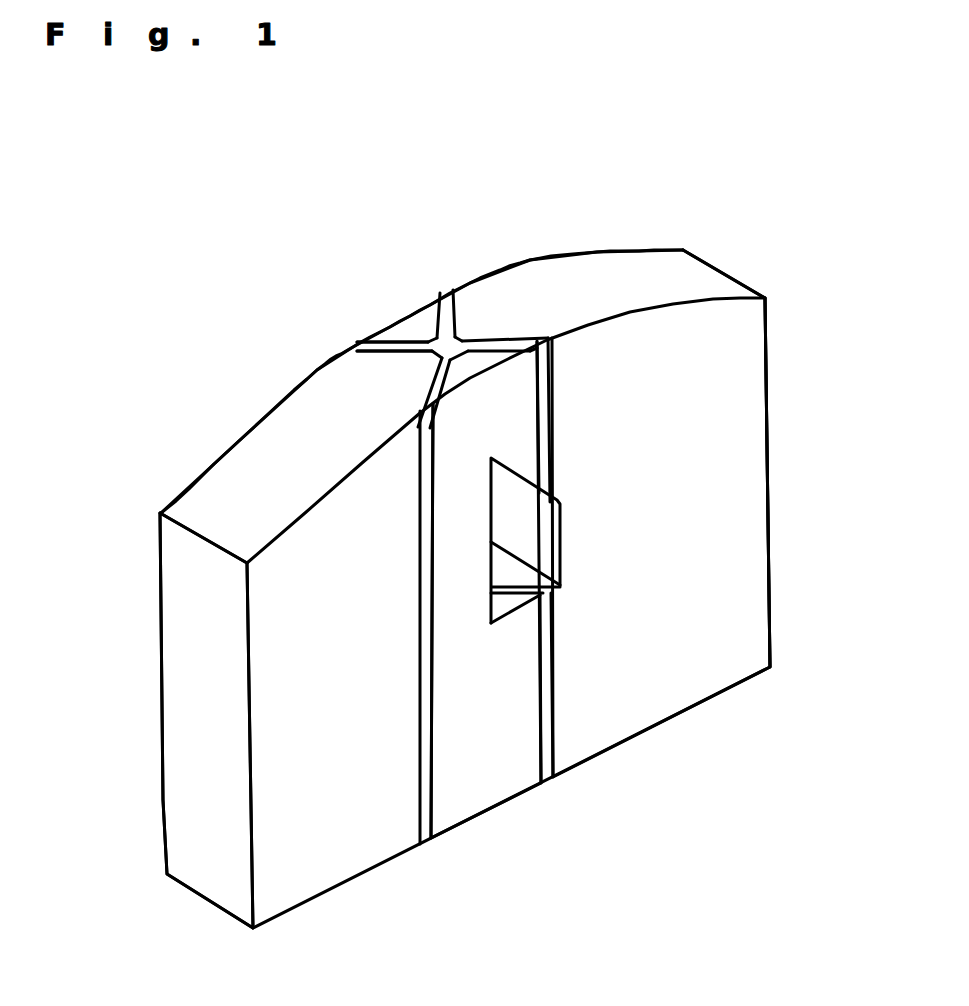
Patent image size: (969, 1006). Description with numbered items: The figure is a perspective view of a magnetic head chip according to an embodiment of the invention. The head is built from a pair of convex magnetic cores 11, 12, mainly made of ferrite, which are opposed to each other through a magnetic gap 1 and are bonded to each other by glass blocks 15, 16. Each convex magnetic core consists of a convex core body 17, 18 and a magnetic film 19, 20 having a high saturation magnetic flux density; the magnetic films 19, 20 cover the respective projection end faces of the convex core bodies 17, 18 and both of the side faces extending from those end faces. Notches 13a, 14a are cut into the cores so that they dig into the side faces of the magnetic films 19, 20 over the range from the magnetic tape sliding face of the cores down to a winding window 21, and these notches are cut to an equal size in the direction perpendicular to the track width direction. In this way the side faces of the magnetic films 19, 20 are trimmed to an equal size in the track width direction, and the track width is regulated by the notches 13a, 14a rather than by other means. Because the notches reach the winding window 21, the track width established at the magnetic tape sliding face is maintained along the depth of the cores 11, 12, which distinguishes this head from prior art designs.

The magnetic gap 1 is at (457, 340).
The convex magnetic core 11 is at (161, 818).
The convex magnetic core 12 is at (767, 450).
The notch 13a is at (436, 335).
The notch 14a is at (452, 352).
The glass block 15 is at (385, 330).
The glass block 16 is at (503, 782).
The convex core body 17 is at (180, 660).
The convex core body 18 is at (738, 620).
The magnetic film 19 is at (393, 350).
The magnetic film 20 is at (522, 340).
The winding window 21 is at (540, 548).